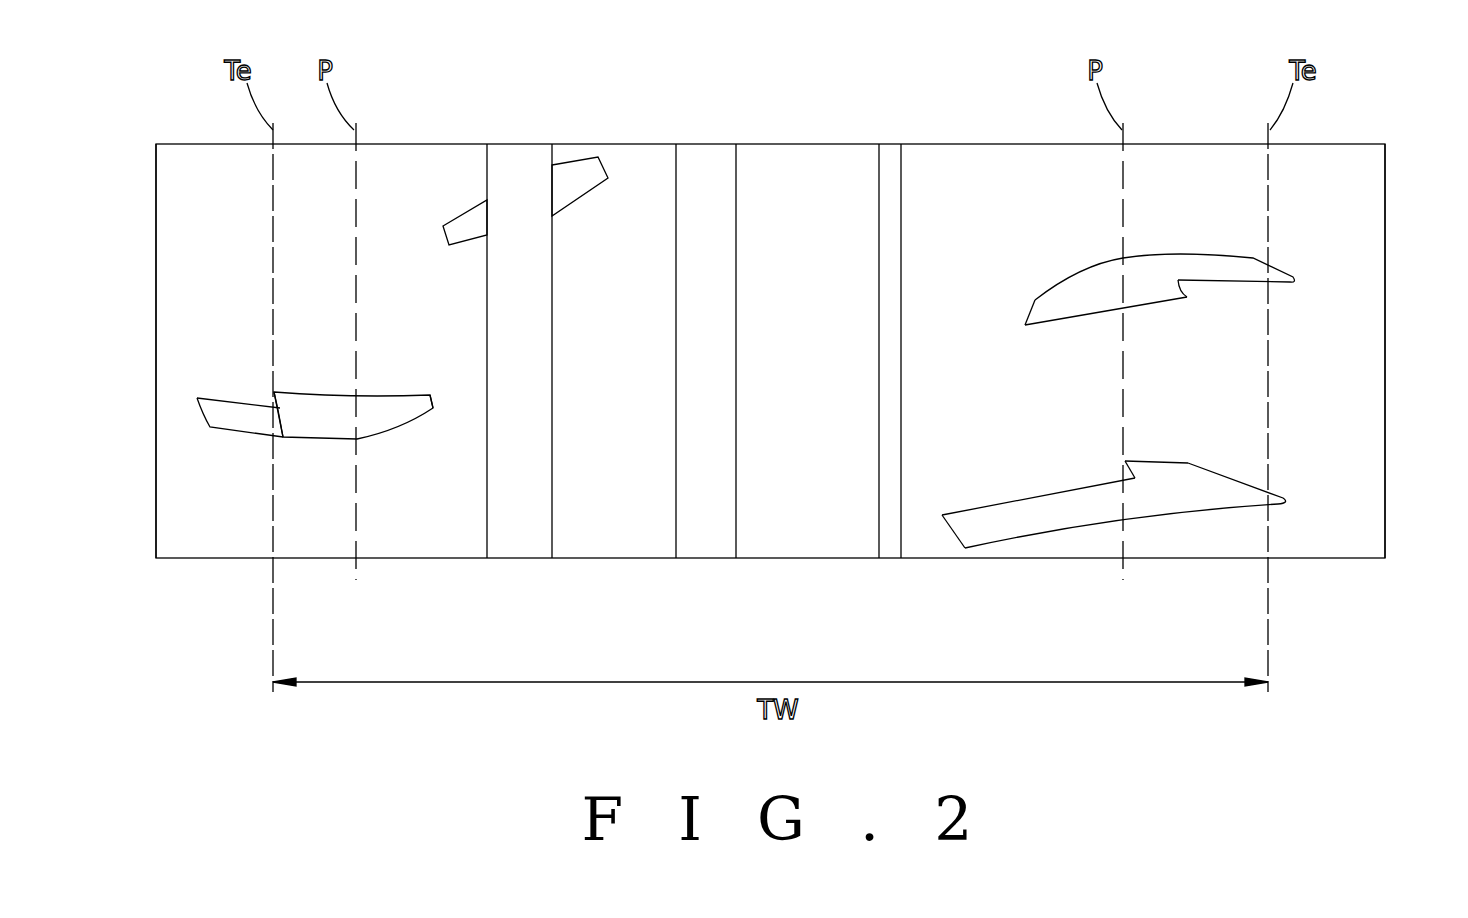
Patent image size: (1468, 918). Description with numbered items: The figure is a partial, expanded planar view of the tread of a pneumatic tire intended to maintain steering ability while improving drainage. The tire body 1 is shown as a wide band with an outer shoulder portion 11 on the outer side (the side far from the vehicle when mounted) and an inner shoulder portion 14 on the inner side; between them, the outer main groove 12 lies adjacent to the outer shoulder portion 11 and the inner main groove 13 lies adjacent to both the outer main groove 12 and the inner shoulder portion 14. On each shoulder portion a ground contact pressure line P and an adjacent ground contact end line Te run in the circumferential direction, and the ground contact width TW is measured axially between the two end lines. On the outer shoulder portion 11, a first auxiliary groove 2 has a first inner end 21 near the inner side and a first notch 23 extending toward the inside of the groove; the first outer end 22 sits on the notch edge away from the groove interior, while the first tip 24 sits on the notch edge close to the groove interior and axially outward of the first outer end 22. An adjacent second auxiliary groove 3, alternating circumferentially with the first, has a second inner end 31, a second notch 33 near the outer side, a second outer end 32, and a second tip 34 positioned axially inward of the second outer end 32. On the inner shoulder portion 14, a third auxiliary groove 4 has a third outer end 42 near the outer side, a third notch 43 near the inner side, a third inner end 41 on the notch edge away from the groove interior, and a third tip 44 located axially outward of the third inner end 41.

The tire body 1 is at (699, 589).
The outer shoulder portion 11 is at (1358, 535).
The outer main groove 12 is at (890, 543).
The inner main groove 13 is at (512, 547).
The inner shoulder portion 14 is at (210, 543).
The first auxiliary groove 2 is at (1178, 538).
The first inner end 21 is at (942, 515).
The first outer end 22 is at (1125, 461).
The first notch 23 is at (1013, 500).
The first tip 24 is at (1135, 478).
The second auxiliary groove 3 is at (1194, 212).
The second inner end 31 is at (1025, 325).
The second outer end 32 is at (1188, 296).
The second notch 33 is at (1218, 280).
The second tip 34 is at (1178, 280).
The third auxiliary groove 4 is at (281, 470).
The third inner end 41 is at (280, 410).
The third outer end 42 is at (438, 382).
The third notch 43 is at (237, 403).
The third tip 44 is at (285, 432).